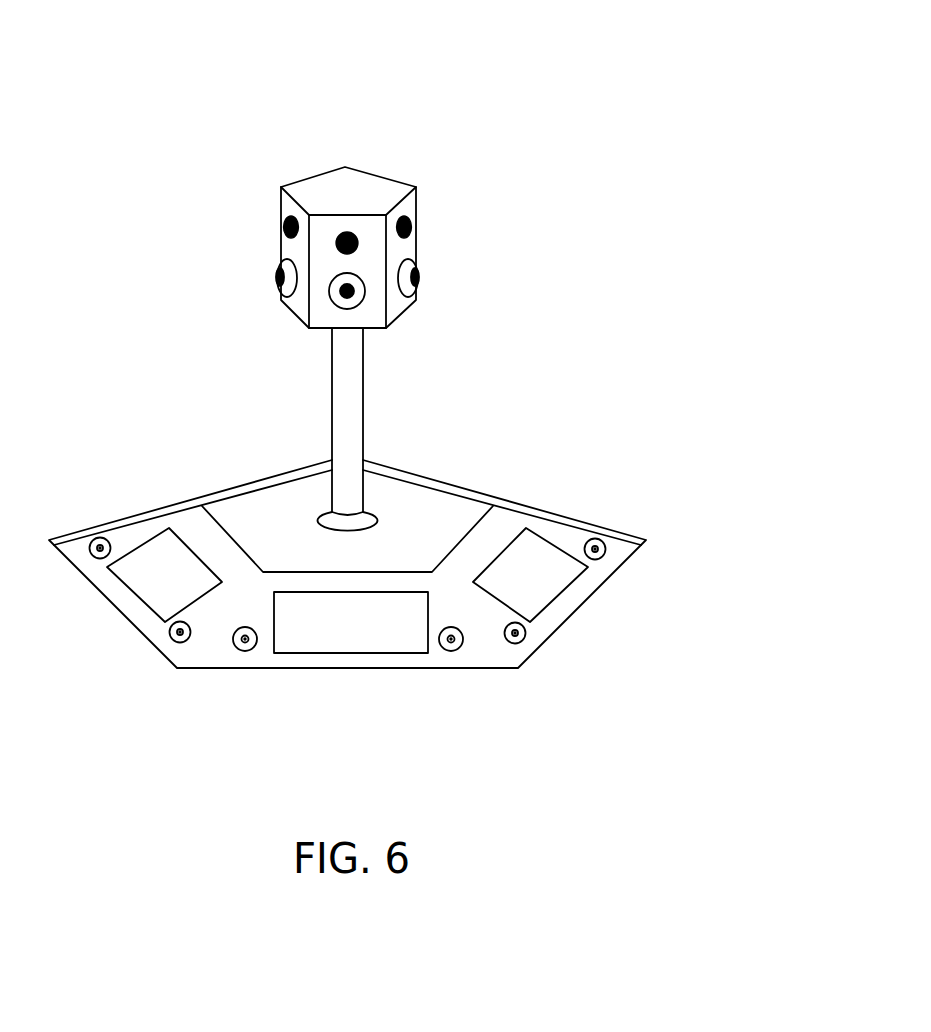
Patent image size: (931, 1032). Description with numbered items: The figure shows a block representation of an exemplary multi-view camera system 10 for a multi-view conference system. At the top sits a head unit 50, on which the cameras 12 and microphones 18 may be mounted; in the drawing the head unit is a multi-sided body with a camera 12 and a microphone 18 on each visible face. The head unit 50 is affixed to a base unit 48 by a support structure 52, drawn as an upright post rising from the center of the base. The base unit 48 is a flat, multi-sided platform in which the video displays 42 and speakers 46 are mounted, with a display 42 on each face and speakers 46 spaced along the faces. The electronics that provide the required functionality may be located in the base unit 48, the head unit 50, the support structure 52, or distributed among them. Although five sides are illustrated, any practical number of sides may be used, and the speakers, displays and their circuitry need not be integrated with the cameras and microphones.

The multi-view camera system 10 is at (447, 60).
The head unit 50 is at (348, 165).
The microphones 18 is at (345, 233).
The cameras 12 is at (283, 298).
The support structure 52 is at (365, 432).
The base unit 48 is at (523, 505).
The speakers 46 is at (246, 651).
The video displays 42 is at (320, 654).